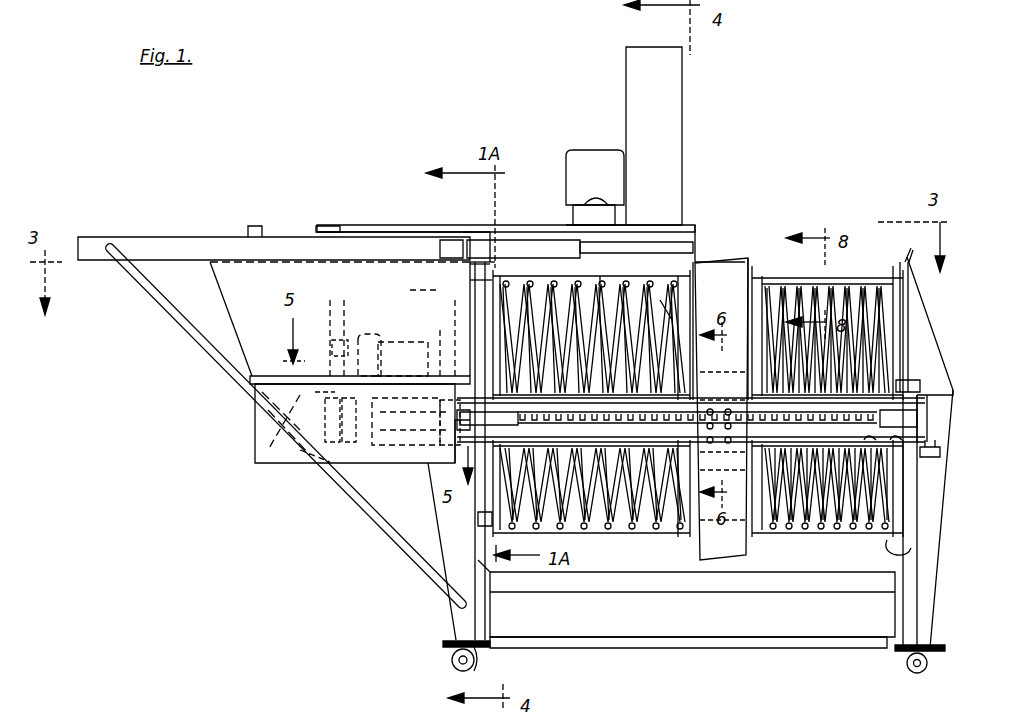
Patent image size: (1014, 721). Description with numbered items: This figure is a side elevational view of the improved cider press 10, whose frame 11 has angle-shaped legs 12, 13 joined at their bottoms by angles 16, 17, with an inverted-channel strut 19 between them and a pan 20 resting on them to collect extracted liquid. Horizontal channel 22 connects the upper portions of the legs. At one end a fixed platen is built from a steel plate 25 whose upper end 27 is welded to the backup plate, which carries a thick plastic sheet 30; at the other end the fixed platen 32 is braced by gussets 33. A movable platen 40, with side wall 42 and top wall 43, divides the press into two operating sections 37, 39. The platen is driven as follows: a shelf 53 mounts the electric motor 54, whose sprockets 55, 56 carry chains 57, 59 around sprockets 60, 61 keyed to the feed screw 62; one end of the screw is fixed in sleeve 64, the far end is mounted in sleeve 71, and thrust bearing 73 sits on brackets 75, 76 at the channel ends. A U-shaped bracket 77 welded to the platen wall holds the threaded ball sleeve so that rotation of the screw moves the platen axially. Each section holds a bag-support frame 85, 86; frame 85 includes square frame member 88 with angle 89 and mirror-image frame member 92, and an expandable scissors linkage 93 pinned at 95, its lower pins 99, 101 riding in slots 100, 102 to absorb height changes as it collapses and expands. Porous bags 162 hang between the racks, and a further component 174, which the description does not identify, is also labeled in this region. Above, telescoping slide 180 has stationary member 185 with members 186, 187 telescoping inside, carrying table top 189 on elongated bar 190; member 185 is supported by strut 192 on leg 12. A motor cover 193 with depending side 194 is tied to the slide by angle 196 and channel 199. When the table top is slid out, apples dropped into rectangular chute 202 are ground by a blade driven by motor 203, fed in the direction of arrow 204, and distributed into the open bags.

The cider press 10 is at (835, 92).
The frame 11 is at (412, 528).
The leg 12 is at (446, 616).
The leg 13 is at (918, 604).
The angle 16 is at (890, 662).
The angle 17 is at (476, 668).
The strut 19 is at (682, 650).
The pan 20 is at (686, 598).
The horizontal channel 22 is at (440, 460).
The steel plate 25 is at (936, 324).
The upper end of steel plate 27 is at (894, 262).
The plastic sheet 30 is at (898, 550).
The fixed platen 32 is at (498, 240).
The gussets 33 is at (410, 294).
The operating section 37 is at (618, 572).
The operating section 39 is at (790, 572).
The movable platen 40 is at (716, 572).
The side wall 42 is at (721, 409).
The top wall 43 is at (738, 262).
The shelf 53 is at (410, 362).
The electric motor 54 is at (376, 330).
The sprocket 55 is at (346, 312).
The sprocket 56 is at (328, 330).
The chain 57 is at (360, 419).
The chain 59 is at (318, 398).
The sprocket 60 is at (354, 436).
The sprocket 61 is at (296, 446).
The feed screw 62 is at (862, 446).
The sleeve 64 is at (446, 470).
The sleeve 71 is at (896, 440).
The thrust bearing 73 is at (914, 384).
The bracket 75 is at (936, 370).
The bracket 76 is at (720, 372).
The U-shaped bracket 77 is at (714, 450).
The frame 85 is at (636, 572).
The frame 86 is at (760, 572).
The square frame member 88 is at (458, 310).
The angle 89 is at (470, 286).
The frame member 92 is at (700, 264).
The scissors linkage 93 is at (612, 282).
The pin connection 95 is at (446, 264).
The pin 99 is at (478, 512).
The slot 100 is at (474, 526).
The pin 101 is at (672, 544).
The slot 102 is at (688, 544).
The porous bag 162 is at (506, 278).
The rod 174 is at (446, 340).
The telescoping slide member 180 is at (472, 240).
The stationary member 185 is at (170, 236).
The telescoping member 186 is at (560, 246).
The telescoping member 187 is at (668, 230).
The table top 189 is at (352, 226).
The elongated bar 190 is at (702, 246).
The strut 192 is at (188, 330).
The motor cover 193 is at (398, 232).
The side of motor cover 194 is at (226, 304).
The angle 196 is at (442, 254).
The channel 199 is at (254, 236).
The rectangular chute 202 is at (682, 108).
The motor 203 is at (600, 152).
The arrow 204 is at (644, 40).